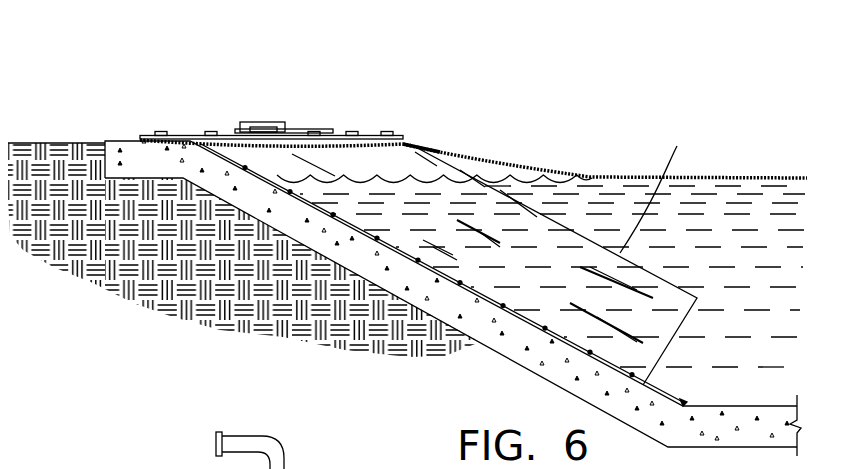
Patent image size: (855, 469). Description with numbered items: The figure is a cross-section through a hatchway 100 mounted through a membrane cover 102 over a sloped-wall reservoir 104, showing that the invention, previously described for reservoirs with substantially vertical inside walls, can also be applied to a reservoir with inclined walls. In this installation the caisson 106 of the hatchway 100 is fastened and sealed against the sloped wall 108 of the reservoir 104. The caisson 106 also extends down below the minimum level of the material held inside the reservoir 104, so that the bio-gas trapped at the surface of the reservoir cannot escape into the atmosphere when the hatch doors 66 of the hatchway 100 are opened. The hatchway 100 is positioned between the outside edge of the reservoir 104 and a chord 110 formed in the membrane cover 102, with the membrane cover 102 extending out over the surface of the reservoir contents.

The hatchway 100 is at (160, 82).
The hatch doors 66 is at (303, 132).
The chord 110 is at (423, 141).
The sloped-wall reservoir 104 is at (570, 111).
The membrane cover 102 is at (587, 174).
The caisson 106 is at (666, 186).
The sloped wall 108 is at (515, 360).